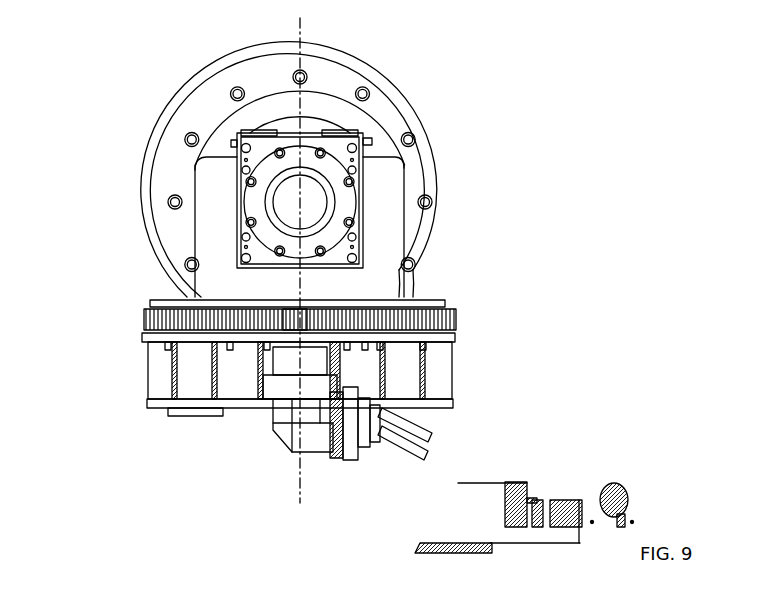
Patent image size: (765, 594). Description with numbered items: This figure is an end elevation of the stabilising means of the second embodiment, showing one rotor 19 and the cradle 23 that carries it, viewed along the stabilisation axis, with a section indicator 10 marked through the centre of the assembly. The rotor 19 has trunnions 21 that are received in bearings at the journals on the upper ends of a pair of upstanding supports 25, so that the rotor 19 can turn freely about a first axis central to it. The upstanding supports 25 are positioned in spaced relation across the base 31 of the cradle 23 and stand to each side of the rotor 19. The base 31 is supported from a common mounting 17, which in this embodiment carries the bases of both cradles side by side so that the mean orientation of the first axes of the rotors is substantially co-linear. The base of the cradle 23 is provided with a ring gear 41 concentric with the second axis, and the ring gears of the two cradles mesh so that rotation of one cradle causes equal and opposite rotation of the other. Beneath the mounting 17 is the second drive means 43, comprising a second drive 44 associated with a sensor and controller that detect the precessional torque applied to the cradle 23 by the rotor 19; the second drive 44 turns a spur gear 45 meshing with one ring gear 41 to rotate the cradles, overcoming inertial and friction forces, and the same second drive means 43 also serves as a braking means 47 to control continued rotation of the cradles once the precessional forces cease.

The section line 10- 10 is at (300, 18).
The common mounting 17 is at (434, 377).
The rotor 19 is at (382, 78).
The trunnions 21 is at (307, 197).
The cradle 23 is at (416, 282).
The upstanding supports 25 is at (388, 217).
The base 31 is at (163, 299).
The ring gear 41 is at (453, 318).
The second drive means 43 is at (268, 445).
The second drive 44 is at (352, 440).
The spur gear 45 is at (293, 317).
The braking means 47 is at (286, 468).